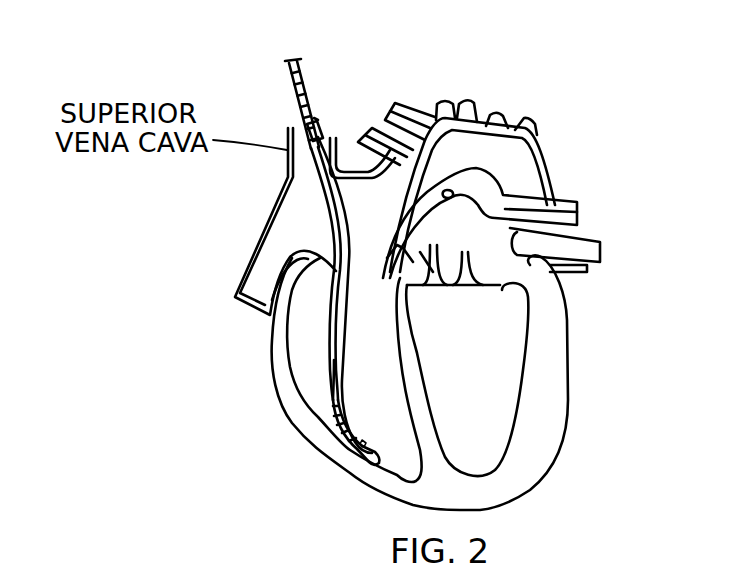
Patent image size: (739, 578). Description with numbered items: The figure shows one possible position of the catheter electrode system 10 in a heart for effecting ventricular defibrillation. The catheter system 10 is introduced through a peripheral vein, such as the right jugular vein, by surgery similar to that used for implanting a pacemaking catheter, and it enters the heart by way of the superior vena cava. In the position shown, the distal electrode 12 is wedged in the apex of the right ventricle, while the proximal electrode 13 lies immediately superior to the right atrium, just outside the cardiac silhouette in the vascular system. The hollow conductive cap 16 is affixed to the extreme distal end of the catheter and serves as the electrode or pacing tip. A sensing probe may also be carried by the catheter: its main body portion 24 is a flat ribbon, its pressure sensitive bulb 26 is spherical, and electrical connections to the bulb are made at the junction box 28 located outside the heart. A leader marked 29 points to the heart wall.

The catheter electrode system 10 is at (312, 232).
The distal electrode 12 is at (346, 449).
The proximal electrode 13 is at (294, 112).
The hollow conductive cap 16 is at (364, 468).
The main body portion 24 is at (338, 258).
The pressure sensitive bulb 26 is at (369, 440).
The junction box 28 is at (320, 127).
The heart wall 29 is at (568, 357).